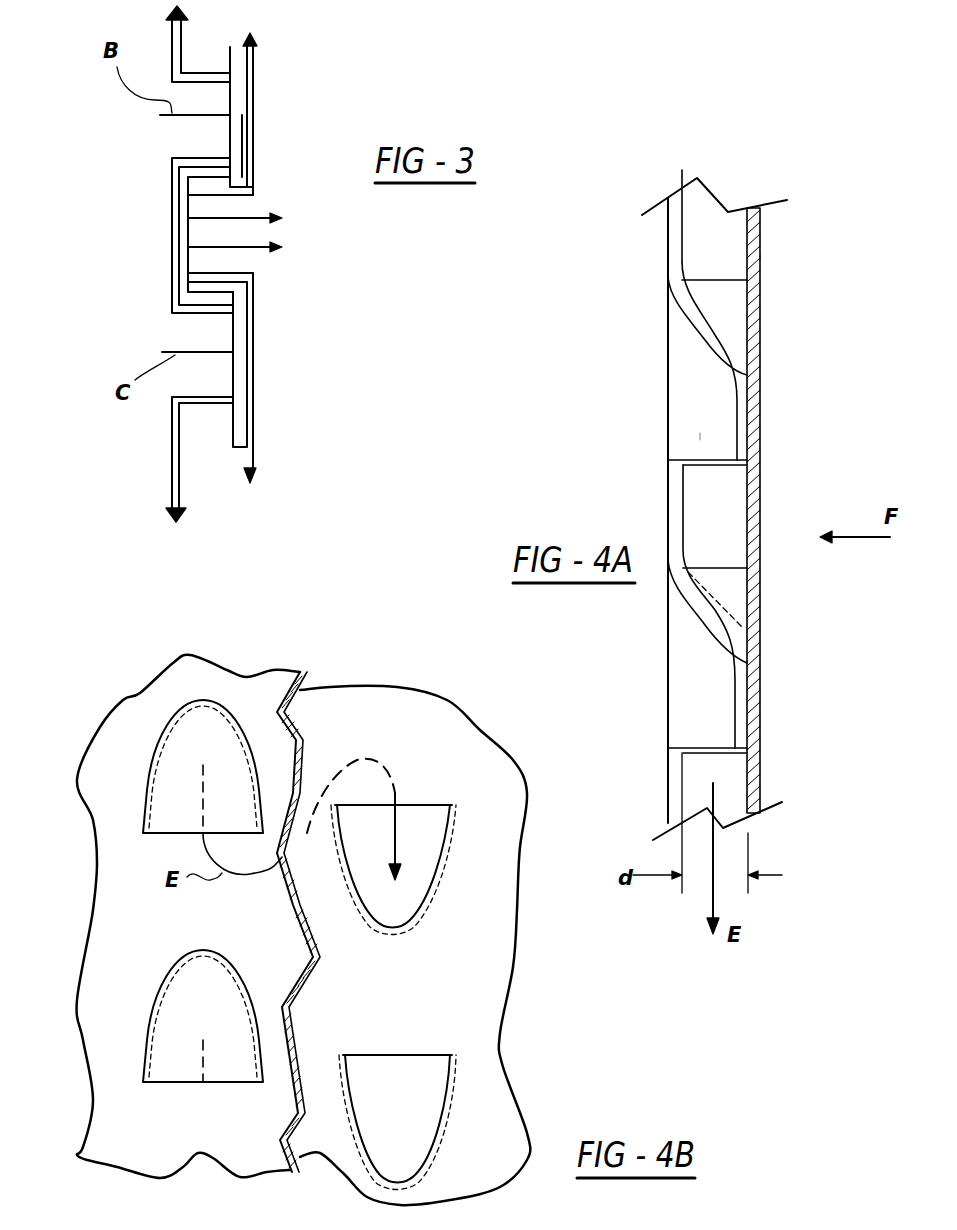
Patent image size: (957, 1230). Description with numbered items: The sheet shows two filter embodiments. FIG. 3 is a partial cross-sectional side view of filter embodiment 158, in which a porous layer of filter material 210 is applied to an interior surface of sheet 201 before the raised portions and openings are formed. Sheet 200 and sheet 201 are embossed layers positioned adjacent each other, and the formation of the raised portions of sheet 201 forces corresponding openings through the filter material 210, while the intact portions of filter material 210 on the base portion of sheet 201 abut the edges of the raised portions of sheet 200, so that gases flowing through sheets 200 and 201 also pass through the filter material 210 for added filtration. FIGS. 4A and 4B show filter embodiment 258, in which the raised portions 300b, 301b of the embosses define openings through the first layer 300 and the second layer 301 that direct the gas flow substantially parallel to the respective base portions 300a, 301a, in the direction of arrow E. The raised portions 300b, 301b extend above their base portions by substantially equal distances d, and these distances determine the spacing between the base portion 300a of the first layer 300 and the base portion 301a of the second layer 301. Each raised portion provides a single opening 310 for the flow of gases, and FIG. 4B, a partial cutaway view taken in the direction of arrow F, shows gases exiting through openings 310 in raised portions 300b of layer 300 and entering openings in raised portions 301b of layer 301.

In FIG. 3, the filter embodiment 158 is at (243, 487).
In FIG. 3, the sheet 200 is at (172, 180).
In FIG. 3, the sheet 201 is at (255, 88).
In FIG. 3, the porous layer of filter material 210 is at (240, 415).
In FIG. 4A, the filter embodiment 258 is at (885, 826).
In FIG. 4B, the filter embodiment 258 is at (605, 1078).
In FIG. 4A, the first layer 300 is at (676, 190).
In FIG. 4B, the first layer 300 is at (168, 686).
In FIG. 4A, the base portion 300a is at (676, 231).
In FIG. 4B, the base portion 300a is at (125, 1103).
In FIG. 4A, the raised portions 300b is at (720, 350).
In FIG. 4B, the raised portions 300b is at (175, 773).
In FIG. 4A, the second layer 301 is at (755, 195).
In FIG. 4B, the second layer 301 is at (367, 704).
In FIG. 4A, the base portion 301a is at (760, 253).
In FIG. 4B, the base portion 301a is at (475, 770).
In FIG. 4A, the raised portions 301b is at (728, 596).
In FIG. 4B, the raised portions 301b is at (440, 887).
In FIG. 4A, the opening 310 is at (700, 433).
In FIG. 4B, the opening 310 is at (203, 1082).